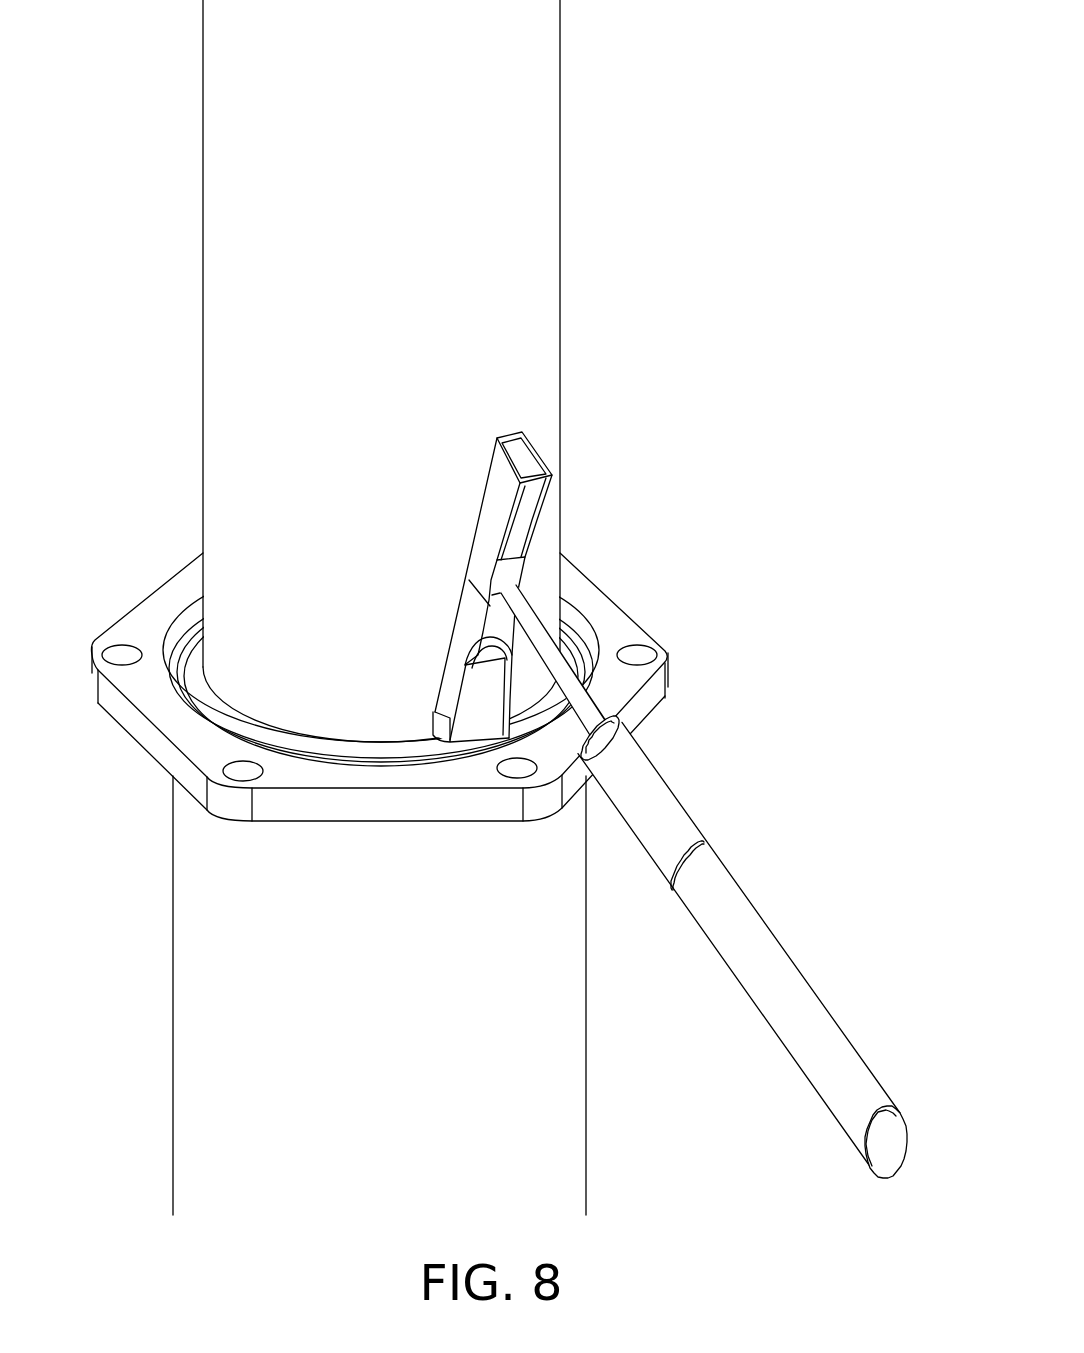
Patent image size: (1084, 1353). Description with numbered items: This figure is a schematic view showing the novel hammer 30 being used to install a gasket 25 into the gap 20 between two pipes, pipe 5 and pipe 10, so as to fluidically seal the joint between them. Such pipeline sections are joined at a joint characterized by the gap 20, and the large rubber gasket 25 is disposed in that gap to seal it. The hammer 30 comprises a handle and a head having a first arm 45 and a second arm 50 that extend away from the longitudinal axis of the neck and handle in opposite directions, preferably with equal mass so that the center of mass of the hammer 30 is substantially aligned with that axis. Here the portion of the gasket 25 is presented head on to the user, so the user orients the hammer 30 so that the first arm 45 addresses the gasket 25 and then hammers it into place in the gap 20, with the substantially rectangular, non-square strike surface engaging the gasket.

The pipe 5 is at (562, 205).
The pipe 10 is at (589, 1101).
The gap 20 is at (373, 752).
The gasket 25 is at (311, 752).
The hammer 30 is at (740, 797).
The first arm 45 is at (470, 730).
The second arm 50 is at (556, 486).